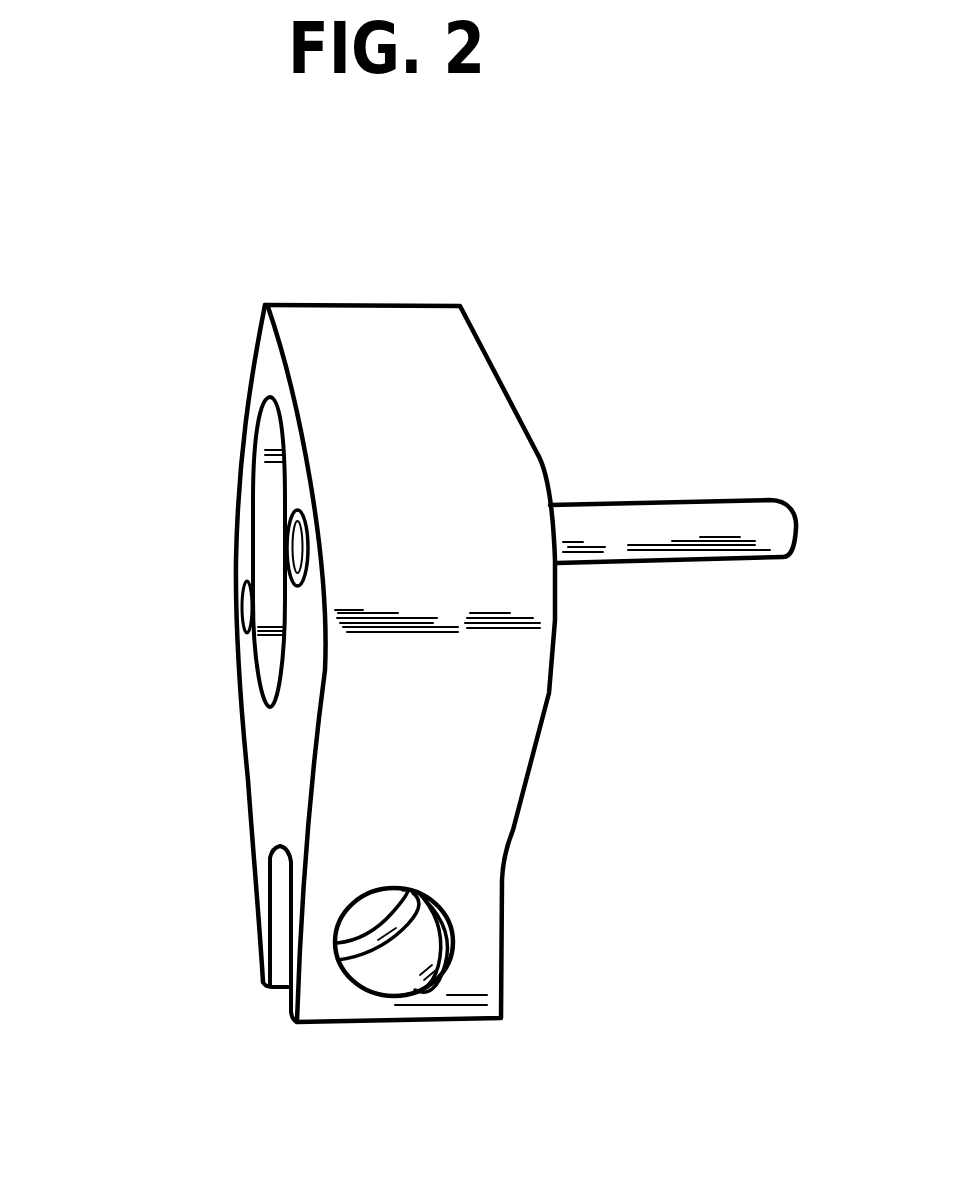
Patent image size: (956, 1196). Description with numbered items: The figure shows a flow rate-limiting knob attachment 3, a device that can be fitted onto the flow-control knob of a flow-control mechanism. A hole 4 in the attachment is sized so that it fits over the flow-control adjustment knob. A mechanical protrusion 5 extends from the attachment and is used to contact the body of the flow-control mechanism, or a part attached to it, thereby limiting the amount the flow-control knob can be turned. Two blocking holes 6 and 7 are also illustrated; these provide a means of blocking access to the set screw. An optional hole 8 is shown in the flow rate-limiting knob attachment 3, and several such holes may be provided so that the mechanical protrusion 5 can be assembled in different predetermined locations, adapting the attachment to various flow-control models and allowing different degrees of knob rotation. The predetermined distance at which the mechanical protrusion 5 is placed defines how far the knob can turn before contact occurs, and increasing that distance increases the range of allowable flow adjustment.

The flow rate-limiting knob attachment 3 is at (254, 813).
The hole 4 is at (267, 517).
The mechanical protrusion 5 is at (667, 558).
The blocking hole 6 is at (368, 957).
The blocking hole 7 is at (431, 974).
The optional hole 8 is at (237, 602).